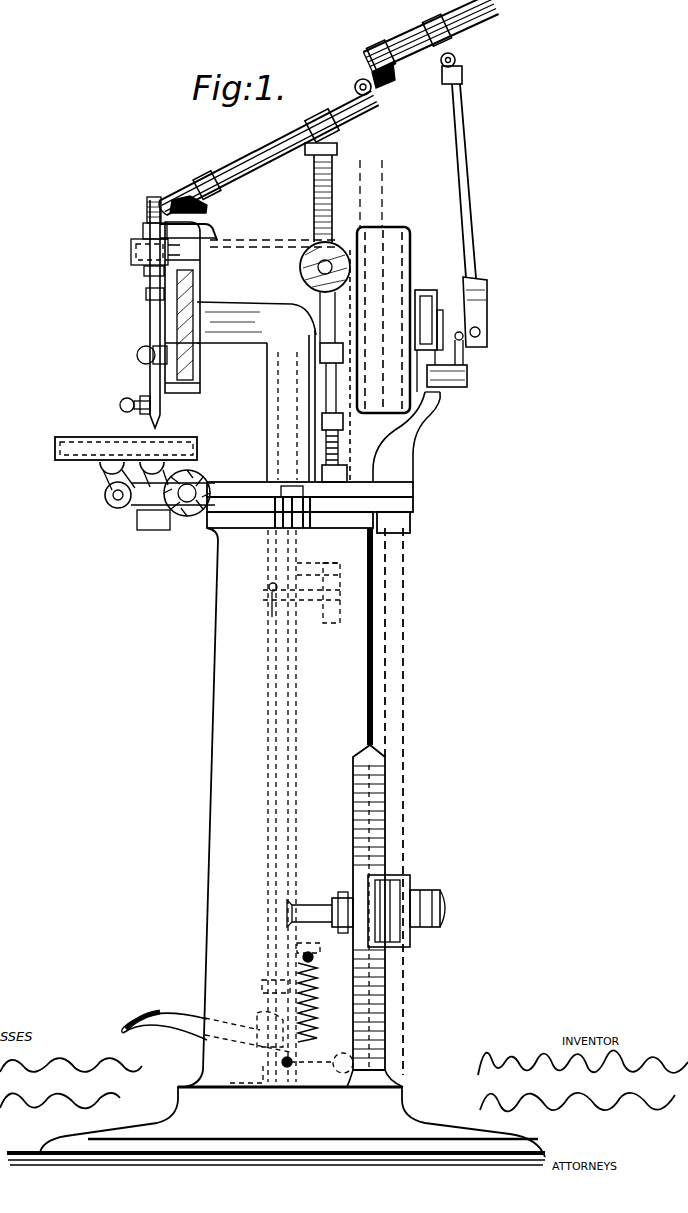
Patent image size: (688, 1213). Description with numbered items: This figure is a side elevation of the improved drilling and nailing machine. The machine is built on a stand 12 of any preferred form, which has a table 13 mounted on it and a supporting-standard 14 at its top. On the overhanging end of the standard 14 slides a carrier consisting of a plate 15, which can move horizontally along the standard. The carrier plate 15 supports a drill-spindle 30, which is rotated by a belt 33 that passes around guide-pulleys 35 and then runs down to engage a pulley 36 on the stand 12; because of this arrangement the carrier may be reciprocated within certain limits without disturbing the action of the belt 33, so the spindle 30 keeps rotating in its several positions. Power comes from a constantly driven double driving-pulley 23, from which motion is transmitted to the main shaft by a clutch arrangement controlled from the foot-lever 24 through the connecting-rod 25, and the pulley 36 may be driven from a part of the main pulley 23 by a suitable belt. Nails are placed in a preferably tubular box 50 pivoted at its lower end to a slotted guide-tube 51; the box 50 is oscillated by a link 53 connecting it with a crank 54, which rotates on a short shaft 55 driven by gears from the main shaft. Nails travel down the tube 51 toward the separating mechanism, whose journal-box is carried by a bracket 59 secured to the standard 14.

The stand 12 is at (220, 674).
The table 13 is at (74, 450).
The supporting-standard 14 is at (237, 333).
The carrier plate 15 is at (167, 335).
The double driving-pulley 23 is at (390, 233).
The foot-lever 24 is at (162, 1012).
The connecting-rod 25 is at (272, 617).
The drill-spindle 30 is at (150, 378).
The belt 33 is at (263, 247).
The guide-pulleys 35 is at (349, 250).
The pulley 36 is at (399, 943).
The box 50 is at (480, 27).
The guide-tube 51 is at (218, 172).
The link 53 is at (476, 245).
The crank 54 is at (467, 355).
The short shaft 55 is at (445, 388).
The bracket 59 is at (212, 232).